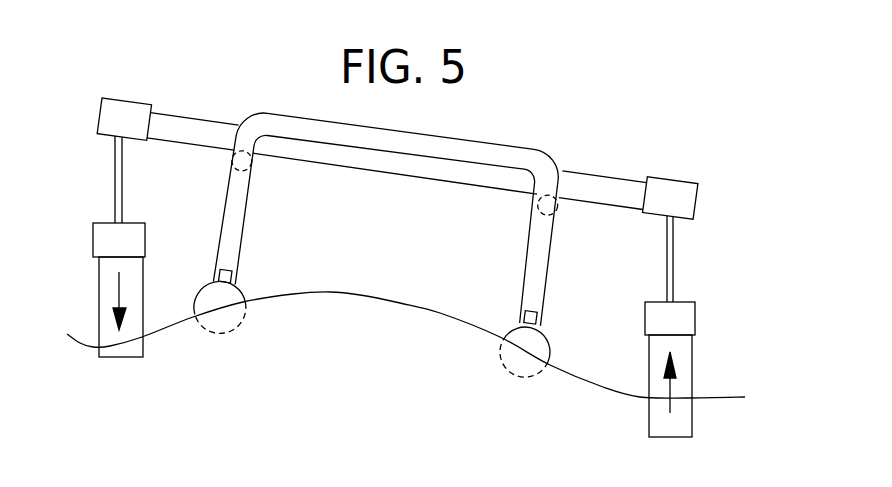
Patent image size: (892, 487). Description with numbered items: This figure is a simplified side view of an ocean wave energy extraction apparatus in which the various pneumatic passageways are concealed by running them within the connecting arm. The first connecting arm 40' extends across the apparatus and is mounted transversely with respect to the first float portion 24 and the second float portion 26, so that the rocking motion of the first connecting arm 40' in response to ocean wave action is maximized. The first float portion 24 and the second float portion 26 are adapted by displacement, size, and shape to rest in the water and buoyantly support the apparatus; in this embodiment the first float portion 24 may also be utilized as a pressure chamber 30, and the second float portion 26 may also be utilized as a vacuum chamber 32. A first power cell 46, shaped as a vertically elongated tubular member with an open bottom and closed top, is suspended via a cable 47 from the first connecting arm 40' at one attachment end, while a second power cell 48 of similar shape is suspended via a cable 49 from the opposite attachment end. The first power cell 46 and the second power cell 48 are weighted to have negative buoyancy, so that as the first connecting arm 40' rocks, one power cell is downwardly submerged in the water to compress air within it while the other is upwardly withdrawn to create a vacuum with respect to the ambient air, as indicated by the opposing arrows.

The first connecting arm 40' is at (399, 145).
The first float portion 24 is at (545, 332).
The second float portion 26 is at (245, 293).
The pressure chamber 30 is at (512, 337).
The vacuum chamber 32 is at (215, 297).
The first power cell 46 is at (147, 243).
The cable 47 is at (124, 170).
The second power cell 48 is at (697, 313).
The cable 49 is at (667, 252).